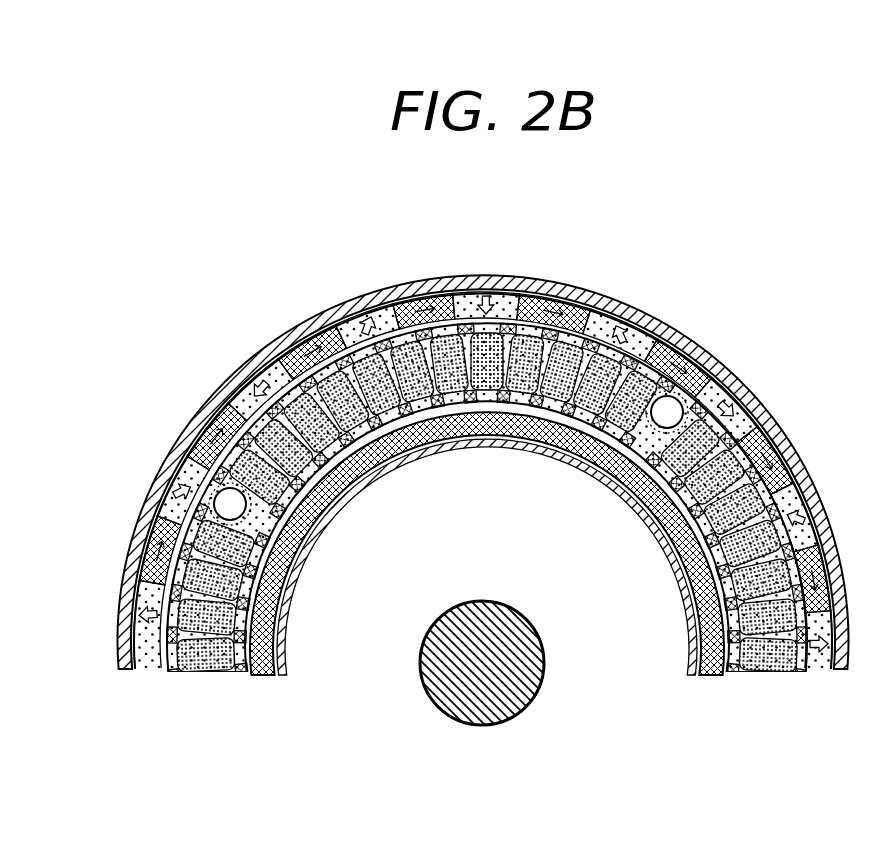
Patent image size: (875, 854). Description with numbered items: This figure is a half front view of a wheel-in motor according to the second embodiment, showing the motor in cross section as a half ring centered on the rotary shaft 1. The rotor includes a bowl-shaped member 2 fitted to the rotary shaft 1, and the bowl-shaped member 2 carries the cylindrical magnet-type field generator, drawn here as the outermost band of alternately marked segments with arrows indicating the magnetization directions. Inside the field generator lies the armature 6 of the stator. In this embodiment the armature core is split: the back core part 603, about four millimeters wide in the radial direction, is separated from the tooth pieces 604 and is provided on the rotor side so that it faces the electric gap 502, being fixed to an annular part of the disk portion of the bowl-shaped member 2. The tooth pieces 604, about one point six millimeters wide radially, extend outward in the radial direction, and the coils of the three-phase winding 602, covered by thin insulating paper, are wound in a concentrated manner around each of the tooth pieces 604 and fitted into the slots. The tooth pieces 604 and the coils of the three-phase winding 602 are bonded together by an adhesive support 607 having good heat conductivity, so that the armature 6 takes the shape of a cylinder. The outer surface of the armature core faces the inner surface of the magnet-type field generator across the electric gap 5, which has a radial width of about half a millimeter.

The rotary shaft 1 is at (463, 693).
The bowl-shaped member 2 is at (208, 410).
The electric gap 5 is at (763, 408).
The armature 6 is at (347, 350).
The electric gap 502 is at (658, 333).
The three-phase winding 602 is at (300, 417).
The back core part 603 is at (590, 297).
The tooth pieces 604 is at (448, 325).
The adhesive support 607 is at (575, 423).